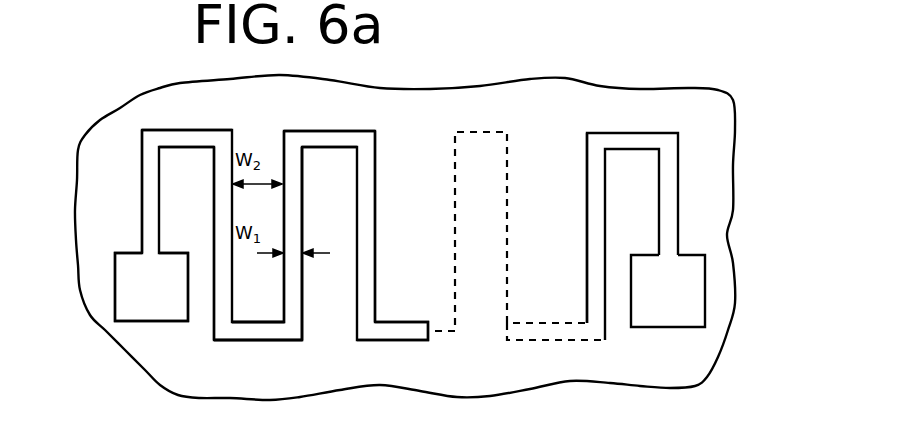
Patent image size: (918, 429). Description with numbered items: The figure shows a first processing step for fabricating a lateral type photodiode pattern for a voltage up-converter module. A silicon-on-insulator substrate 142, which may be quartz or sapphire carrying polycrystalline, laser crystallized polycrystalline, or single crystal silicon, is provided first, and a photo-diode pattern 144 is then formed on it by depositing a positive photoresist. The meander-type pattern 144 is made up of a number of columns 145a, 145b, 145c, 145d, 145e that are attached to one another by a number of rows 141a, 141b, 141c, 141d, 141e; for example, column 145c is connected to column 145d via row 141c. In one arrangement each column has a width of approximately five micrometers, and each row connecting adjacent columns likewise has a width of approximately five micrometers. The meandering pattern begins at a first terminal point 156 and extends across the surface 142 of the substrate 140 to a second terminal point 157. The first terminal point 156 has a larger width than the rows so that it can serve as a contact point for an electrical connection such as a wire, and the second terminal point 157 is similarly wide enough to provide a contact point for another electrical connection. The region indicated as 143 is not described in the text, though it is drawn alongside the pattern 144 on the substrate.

The substrate 140 is at (718, 373).
The silicon-on-insulator substrate 142 is at (567, 80).
The serpentine electrode 143 is at (150, 203).
The photo-diode pattern 144 is at (281, 342).
The row 141a is at (212, 130).
The row 141b is at (232, 342).
The row 141c is at (337, 131).
The row 141d is at (408, 341).
The row 141e is at (618, 133).
The column 145a is at (141, 174).
The column 145b is at (213, 181).
The column 145c is at (303, 308).
The column 145d is at (375, 205).
The column 145e is at (587, 225).
The first terminal point 156 is at (115, 295).
The second terminal point 157 is at (705, 277).